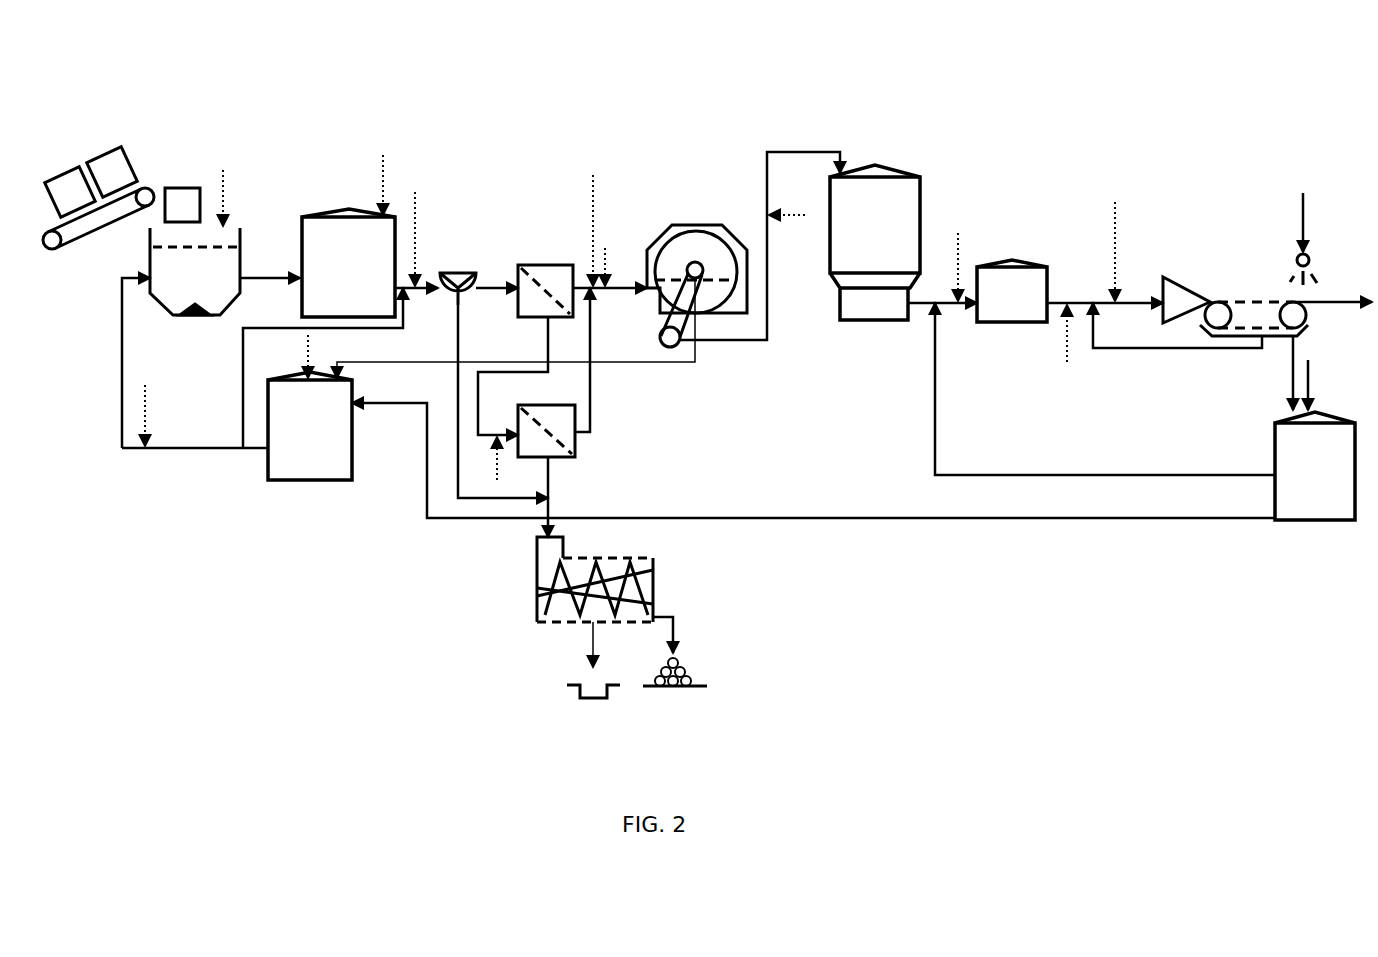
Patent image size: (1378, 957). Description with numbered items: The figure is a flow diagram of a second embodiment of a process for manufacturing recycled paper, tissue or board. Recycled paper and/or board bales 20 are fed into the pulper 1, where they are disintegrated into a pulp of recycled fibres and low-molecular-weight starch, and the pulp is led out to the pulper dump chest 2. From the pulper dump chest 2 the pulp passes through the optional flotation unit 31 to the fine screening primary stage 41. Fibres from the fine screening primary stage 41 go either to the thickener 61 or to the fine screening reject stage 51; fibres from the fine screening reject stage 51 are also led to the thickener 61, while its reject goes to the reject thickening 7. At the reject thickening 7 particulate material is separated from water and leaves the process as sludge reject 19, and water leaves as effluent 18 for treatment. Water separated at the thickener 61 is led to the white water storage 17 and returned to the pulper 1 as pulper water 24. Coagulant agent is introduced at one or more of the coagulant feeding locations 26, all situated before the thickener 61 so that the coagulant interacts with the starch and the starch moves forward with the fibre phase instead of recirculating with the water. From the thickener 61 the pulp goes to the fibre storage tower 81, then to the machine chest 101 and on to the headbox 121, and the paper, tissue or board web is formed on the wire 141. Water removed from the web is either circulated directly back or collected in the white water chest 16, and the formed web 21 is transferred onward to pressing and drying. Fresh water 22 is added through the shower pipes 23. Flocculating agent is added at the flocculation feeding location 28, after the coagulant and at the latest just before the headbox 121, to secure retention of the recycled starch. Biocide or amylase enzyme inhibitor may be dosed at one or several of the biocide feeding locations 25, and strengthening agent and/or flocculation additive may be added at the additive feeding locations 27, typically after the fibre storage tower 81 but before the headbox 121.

The pulper 1 is at (242, 252).
The pulper dump chest 2 is at (322, 212).
The reject thickening 7 is at (655, 570).
The white water chest 16 is at (1342, 415).
The white water storage 17 is at (288, 375).
The effluent 18 is at (594, 652).
The sludge reject 19 is at (675, 626).
The recycled paper and/or board bales 20 is at (128, 152).
The formed paper, tissue or board web 21 is at (1347, 302).
The fresh water 22 is at (1305, 198).
The shower pipes 23 is at (1309, 256).
The pulper water 24 is at (120, 362).
The biocide feeding locations 25 is at (226, 185).
The coagulant feeding locations 26 is at (418, 200).
The additive feeding locations 27 is at (961, 238).
The flocculation feeding location 28 is at (1118, 208).
The flotation unit 31 is at (462, 272).
The fine screening primary stage 41 is at (560, 265).
The fine screening reject stage 51 is at (570, 408).
The thickener 61 is at (688, 222).
The fibre storage tower 81 is at (920, 192).
The machine chest 101 is at (1047, 275).
The headbox 121 is at (1165, 274).
The wire 141 is at (1255, 300).